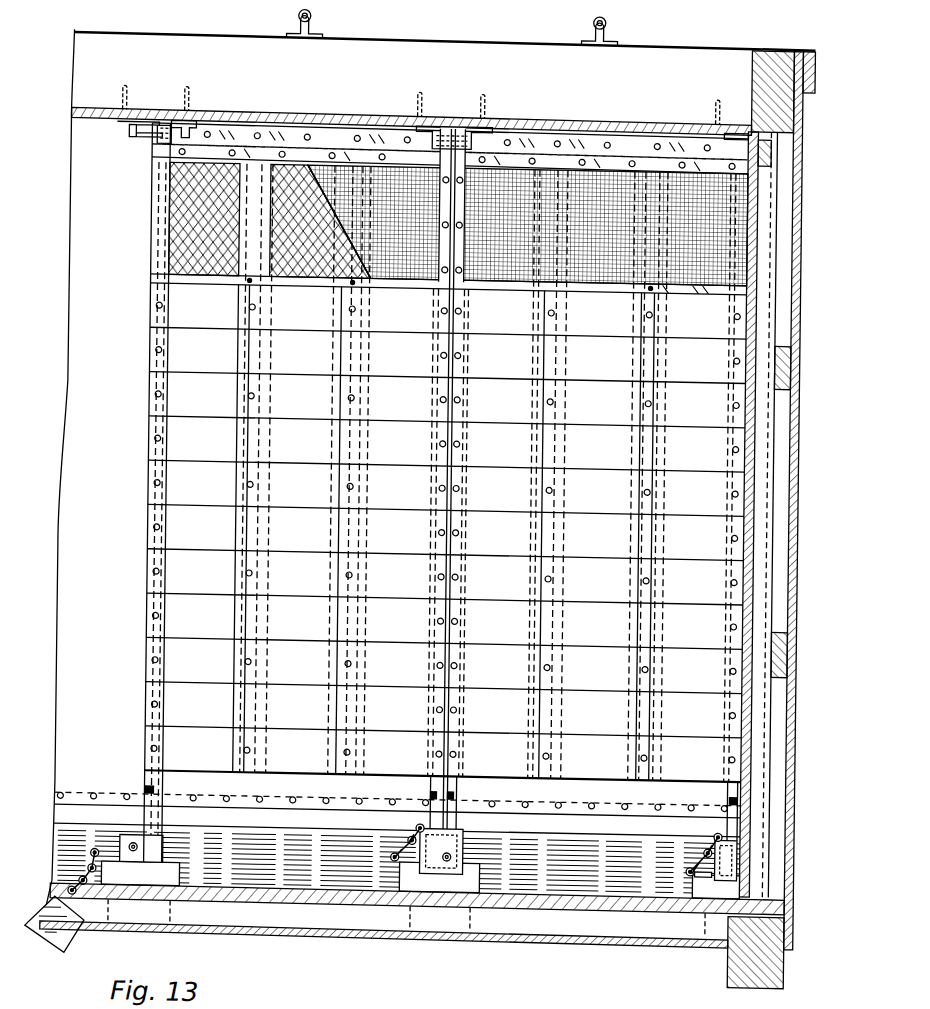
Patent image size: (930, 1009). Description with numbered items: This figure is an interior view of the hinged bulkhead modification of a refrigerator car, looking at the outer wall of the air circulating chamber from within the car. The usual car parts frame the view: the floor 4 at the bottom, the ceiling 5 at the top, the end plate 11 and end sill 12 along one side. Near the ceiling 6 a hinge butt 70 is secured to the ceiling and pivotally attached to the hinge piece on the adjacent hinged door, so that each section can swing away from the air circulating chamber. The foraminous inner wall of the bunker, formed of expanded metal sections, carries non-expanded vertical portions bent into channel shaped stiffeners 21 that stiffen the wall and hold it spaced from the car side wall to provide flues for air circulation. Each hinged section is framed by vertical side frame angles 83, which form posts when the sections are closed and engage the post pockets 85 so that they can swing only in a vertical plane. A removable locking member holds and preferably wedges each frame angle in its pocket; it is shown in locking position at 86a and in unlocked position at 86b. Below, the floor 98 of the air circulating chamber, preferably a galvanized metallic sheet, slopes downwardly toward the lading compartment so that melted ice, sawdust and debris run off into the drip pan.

The floor 4 is at (330, 900).
The ceiling 5 is at (408, 43).
The ceiling 6 is at (582, 122).
The end plate 11 is at (778, 113).
The end sill 12 is at (786, 971).
The channel shaped stiffener 21 is at (253, 364).
The hinge butt 70 is at (138, 131).
The vertical side frame angle 83 is at (458, 782).
The post pocket 85 is at (167, 856).
The locking member in locking position 86a is at (452, 875).
The locking member in unlocked position 86b is at (62, 948).
The floor of the air circulating chamber 98 is at (398, 862).